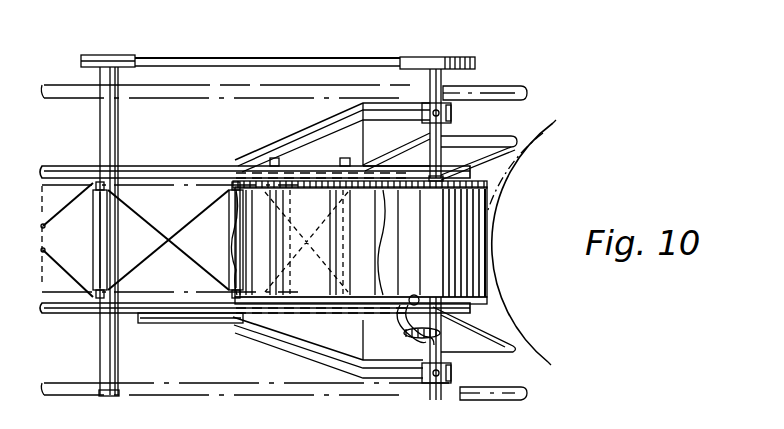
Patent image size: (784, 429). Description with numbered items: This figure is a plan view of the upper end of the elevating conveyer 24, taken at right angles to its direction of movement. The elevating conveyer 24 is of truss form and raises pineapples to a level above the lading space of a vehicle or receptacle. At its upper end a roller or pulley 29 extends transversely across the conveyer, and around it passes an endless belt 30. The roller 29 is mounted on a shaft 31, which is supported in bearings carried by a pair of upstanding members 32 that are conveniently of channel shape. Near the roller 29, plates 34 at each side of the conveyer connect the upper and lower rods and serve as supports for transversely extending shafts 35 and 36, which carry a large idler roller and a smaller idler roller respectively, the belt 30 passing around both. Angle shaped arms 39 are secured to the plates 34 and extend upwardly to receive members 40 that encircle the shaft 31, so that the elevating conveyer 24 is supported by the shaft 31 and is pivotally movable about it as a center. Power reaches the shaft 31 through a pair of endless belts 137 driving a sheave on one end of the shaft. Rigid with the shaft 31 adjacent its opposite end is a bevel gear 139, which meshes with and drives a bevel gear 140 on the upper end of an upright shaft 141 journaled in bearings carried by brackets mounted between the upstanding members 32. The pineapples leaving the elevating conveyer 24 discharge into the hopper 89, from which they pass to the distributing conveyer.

The endless belts 137 is at (241, 60).
The members 40 is at (448, 113).
The upstanding members 32 is at (527, 86).
The angle shaped arms 39 is at (340, 124).
The plates 34 is at (241, 161).
The shaft 35 is at (352, 165).
The shaft 36 is at (343, 163).
The shaft 31 is at (447, 130).
The hopper 89 is at (546, 135).
The roller or pulley 29 is at (485, 212).
The endless belt 30 is at (480, 283).
The elevating conveyer 24 is at (80, 314).
The upright shaft 141 is at (204, 324).
The bevel gear 140 is at (410, 333).
The bevel gear 139 is at (452, 345).